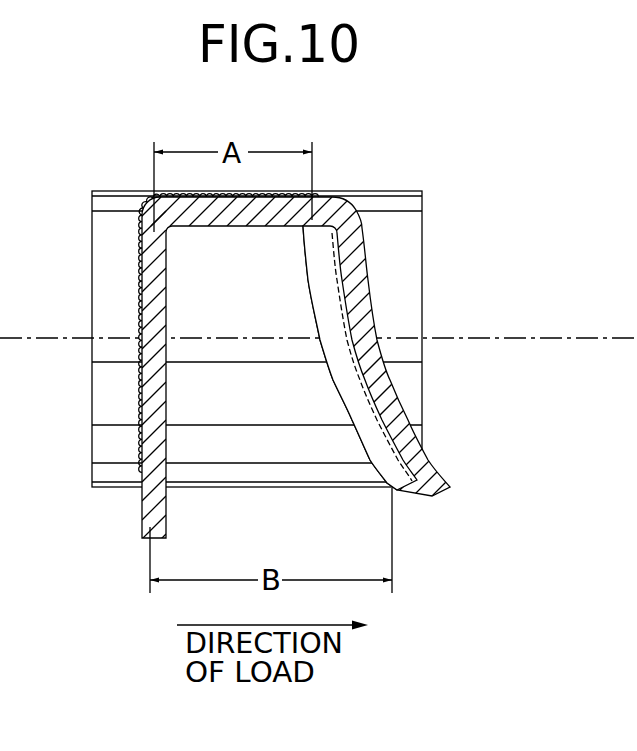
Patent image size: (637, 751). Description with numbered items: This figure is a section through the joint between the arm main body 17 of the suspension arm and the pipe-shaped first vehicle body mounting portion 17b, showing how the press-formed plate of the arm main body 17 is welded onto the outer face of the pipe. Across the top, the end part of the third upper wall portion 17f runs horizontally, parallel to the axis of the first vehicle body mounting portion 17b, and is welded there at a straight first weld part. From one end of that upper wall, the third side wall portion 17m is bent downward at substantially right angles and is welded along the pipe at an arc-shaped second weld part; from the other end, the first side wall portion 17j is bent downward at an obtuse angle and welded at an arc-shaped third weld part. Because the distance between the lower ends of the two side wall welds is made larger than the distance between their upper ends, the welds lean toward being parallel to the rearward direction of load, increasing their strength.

The arm main body 17 is at (360, 180).
The first vehicle body mounting portion 17b is at (120, 209).
The third upper wall portion 17f is at (227, 226).
The first side wall portion 17j is at (343, 387).
The third side wall portion 17m is at (165, 443).